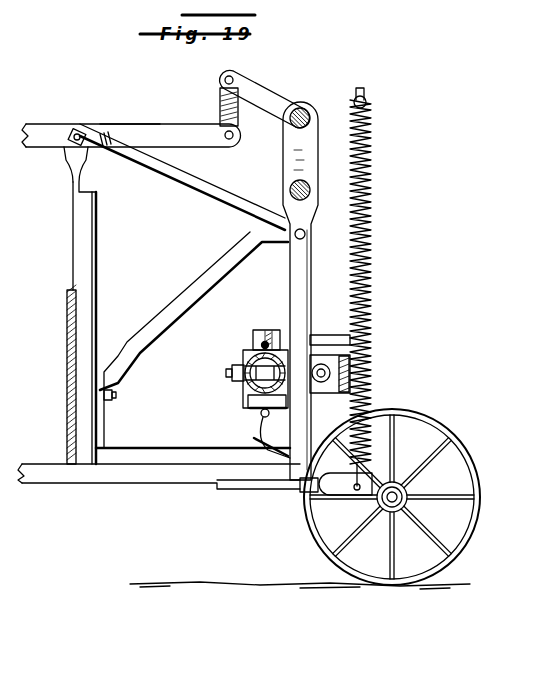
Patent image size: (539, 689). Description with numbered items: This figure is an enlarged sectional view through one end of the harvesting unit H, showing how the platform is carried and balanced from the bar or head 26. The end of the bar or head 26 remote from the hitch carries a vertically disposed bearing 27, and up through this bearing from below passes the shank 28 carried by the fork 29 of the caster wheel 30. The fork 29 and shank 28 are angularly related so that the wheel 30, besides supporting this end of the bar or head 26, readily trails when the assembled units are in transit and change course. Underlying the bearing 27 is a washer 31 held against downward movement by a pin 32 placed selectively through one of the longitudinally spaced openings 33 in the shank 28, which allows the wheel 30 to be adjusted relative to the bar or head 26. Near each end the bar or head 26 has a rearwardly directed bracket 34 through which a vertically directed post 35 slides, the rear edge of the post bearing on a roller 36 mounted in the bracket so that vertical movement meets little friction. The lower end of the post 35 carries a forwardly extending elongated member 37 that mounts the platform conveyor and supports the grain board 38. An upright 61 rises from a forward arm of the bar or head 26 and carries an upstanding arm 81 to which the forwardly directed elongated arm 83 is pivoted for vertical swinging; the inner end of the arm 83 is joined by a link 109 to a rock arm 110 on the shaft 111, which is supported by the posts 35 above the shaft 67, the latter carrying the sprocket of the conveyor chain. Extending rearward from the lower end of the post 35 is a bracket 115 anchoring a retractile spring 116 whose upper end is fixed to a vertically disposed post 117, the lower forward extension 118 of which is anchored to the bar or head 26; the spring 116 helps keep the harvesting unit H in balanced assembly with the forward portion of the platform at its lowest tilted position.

The forwardly directed elongated arm 83 is at (33, 123).
The harvesting unit H is at (141, 118).
The upstanding arm 81 is at (62, 185).
The upright 61 is at (90, 258).
The grain board 38 is at (67, 354).
The link 109 is at (229, 104).
The rock arm 110 is at (253, 87).
The shaft 111 is at (303, 107).
The shaft 67 is at (290, 191).
The vertically directed post 35 is at (312, 262).
The vertically disposed post 117 is at (366, 95).
The retractile spring 116 is at (372, 184).
The forward extension 118 is at (322, 343).
The rearwardly directed bracket 34 is at (342, 364).
The roller 36 is at (352, 380).
The shank 28 is at (252, 338).
The longitudinally spaced opening 33 is at (266, 342).
The bearing 27 is at (243, 358).
The bar or head 26 is at (245, 390).
The washer 31 is at (246, 408).
The pin 32 is at (262, 438).
The forwardly extending elongated member 37 is at (128, 496).
The fork 29 is at (305, 484).
The bracket 115 is at (334, 498).
The caster wheel 30 is at (481, 470).